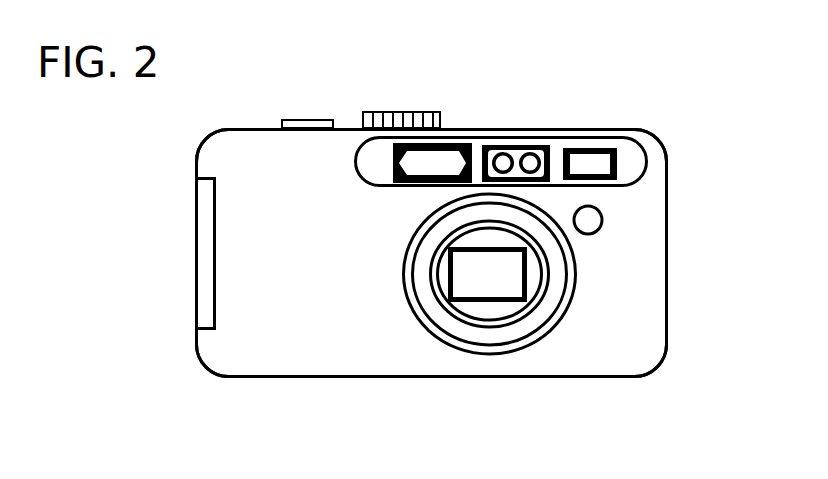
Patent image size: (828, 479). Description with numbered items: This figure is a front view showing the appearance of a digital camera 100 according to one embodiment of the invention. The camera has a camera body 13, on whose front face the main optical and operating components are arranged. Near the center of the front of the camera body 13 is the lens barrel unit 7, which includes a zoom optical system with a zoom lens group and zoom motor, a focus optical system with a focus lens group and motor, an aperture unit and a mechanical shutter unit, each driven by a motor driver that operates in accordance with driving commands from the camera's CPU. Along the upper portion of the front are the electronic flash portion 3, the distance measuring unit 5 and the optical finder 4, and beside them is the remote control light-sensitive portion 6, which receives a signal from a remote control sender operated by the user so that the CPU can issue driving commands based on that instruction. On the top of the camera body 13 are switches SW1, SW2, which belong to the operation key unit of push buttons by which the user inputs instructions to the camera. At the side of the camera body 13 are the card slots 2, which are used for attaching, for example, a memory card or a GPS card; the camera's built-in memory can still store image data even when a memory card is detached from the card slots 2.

The digital camera 100 is at (652, 113).
The camera body 13 is at (262, 378).
The card slots 2 is at (215, 253).
The switch SW1 is at (315, 120).
The switch SW2 is at (418, 112).
The electronic flash portion 3 is at (393, 163).
The distance measuring unit 5 is at (510, 145).
The optical finder 4 is at (602, 181).
The remote control light-sensitive portion 6 is at (591, 235).
The lens barrel unit 7 is at (446, 275).